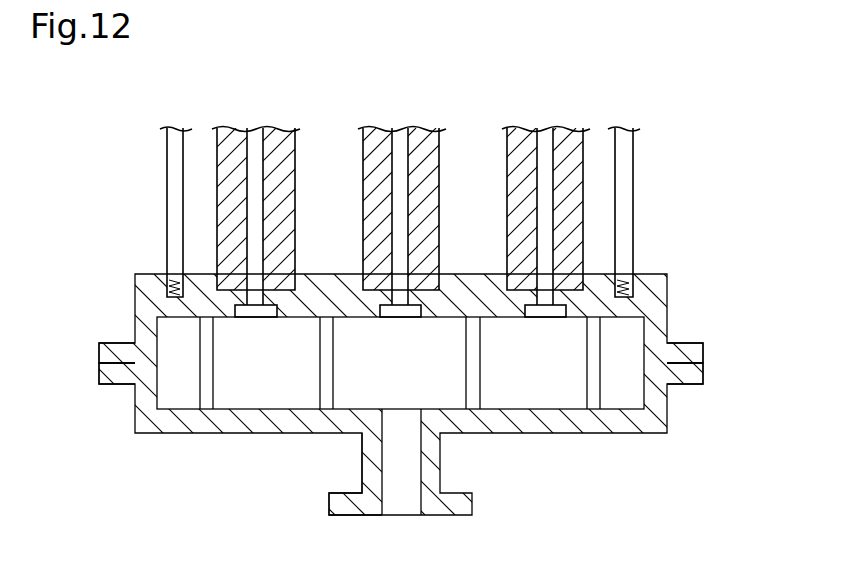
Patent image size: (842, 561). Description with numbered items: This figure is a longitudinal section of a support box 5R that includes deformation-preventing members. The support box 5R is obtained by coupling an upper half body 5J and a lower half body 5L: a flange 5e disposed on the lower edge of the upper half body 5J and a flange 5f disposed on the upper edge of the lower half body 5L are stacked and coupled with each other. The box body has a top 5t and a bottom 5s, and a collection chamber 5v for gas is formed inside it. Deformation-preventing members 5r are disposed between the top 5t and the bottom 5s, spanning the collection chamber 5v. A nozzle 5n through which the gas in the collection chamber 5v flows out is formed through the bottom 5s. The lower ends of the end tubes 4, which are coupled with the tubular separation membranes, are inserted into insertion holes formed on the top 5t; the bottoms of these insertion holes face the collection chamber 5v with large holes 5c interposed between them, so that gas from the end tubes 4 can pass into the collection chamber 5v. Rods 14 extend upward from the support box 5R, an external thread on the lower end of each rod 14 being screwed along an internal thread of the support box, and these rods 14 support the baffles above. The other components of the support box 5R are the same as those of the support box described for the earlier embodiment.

The end tube 4 is at (296, 158).
The rod 14 is at (166, 173).
The support box 5R is at (421, 370).
The upper half body 5J is at (668, 300).
The lower half body 5L is at (668, 415).
The flange 5e is at (690, 343).
The flange 5f is at (694, 383).
The top 5t is at (177, 323).
The bottom 5s is at (172, 402).
The large hole 5c is at (258, 318).
The deformation-preventing member 5r is at (213, 385).
The nozzle 5n is at (362, 462).
The collection chamber 5v is at (511, 390).